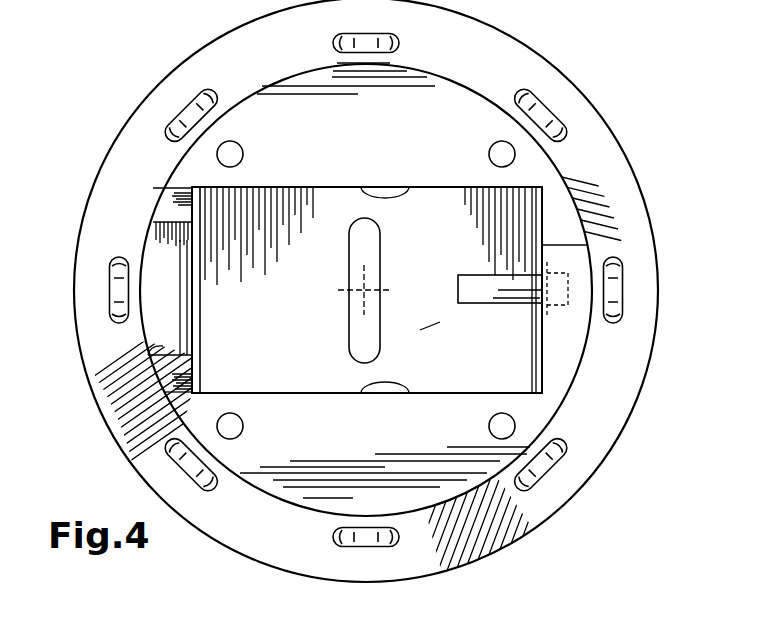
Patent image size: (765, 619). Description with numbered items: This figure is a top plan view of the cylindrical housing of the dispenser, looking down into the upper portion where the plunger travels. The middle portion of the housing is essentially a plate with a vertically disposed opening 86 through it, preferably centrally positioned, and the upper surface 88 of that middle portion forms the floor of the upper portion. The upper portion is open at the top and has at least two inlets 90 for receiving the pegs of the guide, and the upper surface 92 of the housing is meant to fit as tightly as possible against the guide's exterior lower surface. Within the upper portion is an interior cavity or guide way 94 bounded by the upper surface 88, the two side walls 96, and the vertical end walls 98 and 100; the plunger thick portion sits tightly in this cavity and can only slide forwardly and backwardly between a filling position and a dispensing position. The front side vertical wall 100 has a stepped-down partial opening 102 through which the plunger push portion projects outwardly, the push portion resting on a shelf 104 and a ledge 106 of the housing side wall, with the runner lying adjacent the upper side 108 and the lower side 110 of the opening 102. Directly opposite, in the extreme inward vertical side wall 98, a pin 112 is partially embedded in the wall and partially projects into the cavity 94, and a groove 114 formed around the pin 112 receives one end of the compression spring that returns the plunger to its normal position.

The opening 86 is at (383, 254).
The upper surface 88 is at (505, 345).
The inlets 90 is at (500, 141).
The upper surface 92 is at (560, 317).
The cavity 94 is at (440, 322).
The side walls 96 is at (373, 192).
The vertical side wall 98 is at (587, 245).
The front side vertical wall 100 is at (193, 333).
The partial opening 102 is at (163, 248).
The shelf 104 is at (155, 295).
The ledge 106 is at (172, 370).
The upper side of the opening 108 is at (170, 190).
The lower side of the opening 110 is at (163, 353).
The pin 112 is at (493, 275).
The groove 114 is at (547, 287).